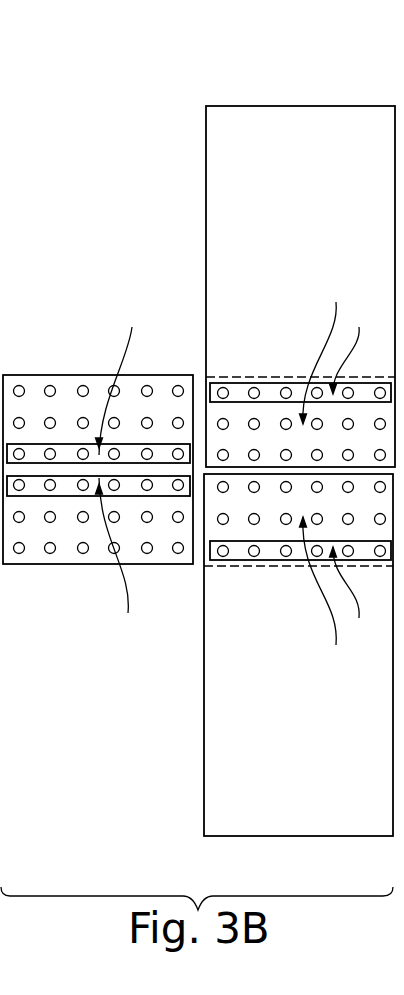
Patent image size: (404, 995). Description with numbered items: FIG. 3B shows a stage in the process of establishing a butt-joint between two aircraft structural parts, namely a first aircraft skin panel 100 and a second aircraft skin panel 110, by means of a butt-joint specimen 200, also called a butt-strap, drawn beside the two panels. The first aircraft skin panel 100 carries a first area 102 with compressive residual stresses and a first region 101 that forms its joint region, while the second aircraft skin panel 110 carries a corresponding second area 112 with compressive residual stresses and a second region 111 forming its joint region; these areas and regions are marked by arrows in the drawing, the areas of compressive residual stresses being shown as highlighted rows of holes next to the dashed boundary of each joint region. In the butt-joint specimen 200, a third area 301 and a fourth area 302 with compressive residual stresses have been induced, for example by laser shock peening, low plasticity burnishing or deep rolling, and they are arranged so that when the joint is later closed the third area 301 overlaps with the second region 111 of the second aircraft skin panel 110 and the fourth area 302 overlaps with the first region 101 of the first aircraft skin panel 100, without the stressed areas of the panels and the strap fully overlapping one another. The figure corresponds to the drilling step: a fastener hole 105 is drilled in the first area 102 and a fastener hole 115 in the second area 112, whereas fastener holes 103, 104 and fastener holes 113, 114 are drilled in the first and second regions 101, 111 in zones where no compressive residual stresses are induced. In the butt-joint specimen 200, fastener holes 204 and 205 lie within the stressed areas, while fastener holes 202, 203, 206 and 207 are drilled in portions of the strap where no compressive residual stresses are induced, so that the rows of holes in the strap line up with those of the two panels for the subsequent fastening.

The first aircraft skin panel 100 is at (299, 822).
The first region 101 is at (327, 592).
The first area 102 is at (353, 594).
The fastener hole 103 is at (228, 489).
The fastener hole 104 is at (228, 522).
The fastener hole 105 is at (223, 556).
The second aircraft skin panel 110 is at (296, 138).
The second region 111 is at (327, 352).
The second area 112 is at (353, 349).
The fastener hole 113 is at (227, 453).
The fastener hole 114 is at (228, 423).
The fastener hole 115 is at (223, 390).
The butt-joint specimen 200 is at (162, 390).
The fastener hole 202 is at (20, 551).
The fastener hole 203 is at (20, 488).
The fastener hole 204 is at (20, 518).
The fastener hole 205 is at (20, 452).
The fastener hole 206 is at (20, 423).
The fastener hole 207 is at (20, 389).
The third area 301 is at (120, 379).
The fourth area 302 is at (119, 559).